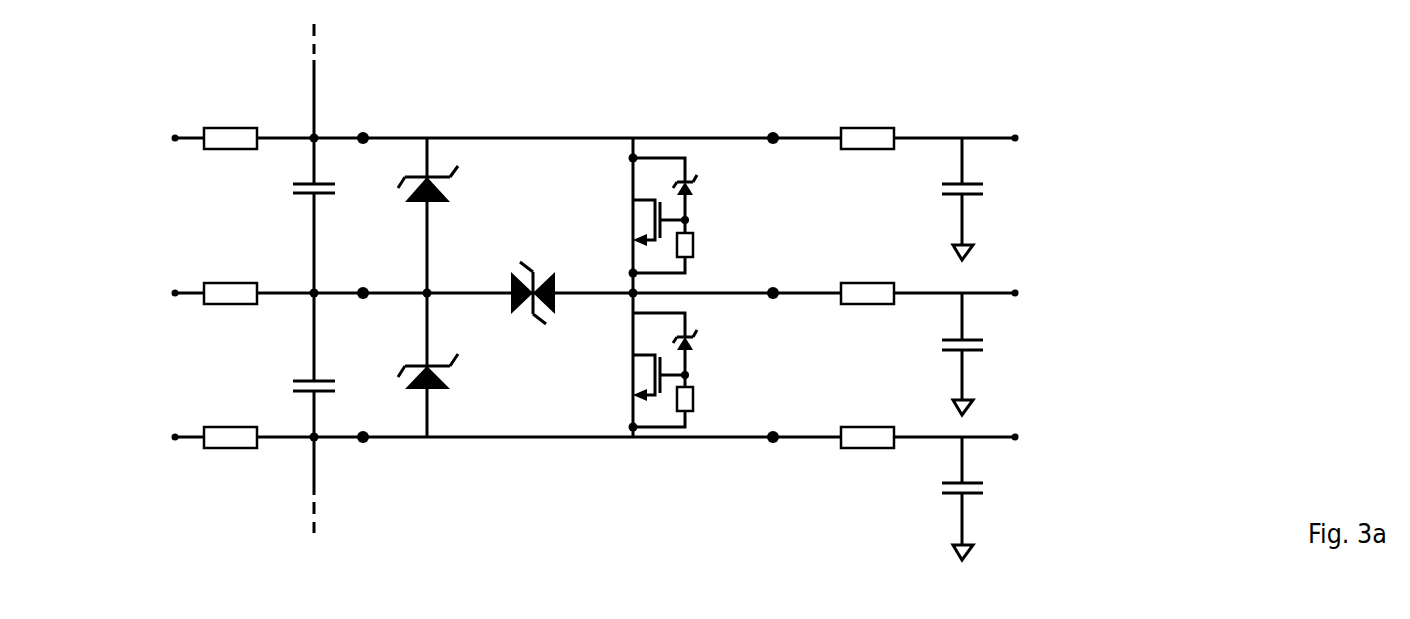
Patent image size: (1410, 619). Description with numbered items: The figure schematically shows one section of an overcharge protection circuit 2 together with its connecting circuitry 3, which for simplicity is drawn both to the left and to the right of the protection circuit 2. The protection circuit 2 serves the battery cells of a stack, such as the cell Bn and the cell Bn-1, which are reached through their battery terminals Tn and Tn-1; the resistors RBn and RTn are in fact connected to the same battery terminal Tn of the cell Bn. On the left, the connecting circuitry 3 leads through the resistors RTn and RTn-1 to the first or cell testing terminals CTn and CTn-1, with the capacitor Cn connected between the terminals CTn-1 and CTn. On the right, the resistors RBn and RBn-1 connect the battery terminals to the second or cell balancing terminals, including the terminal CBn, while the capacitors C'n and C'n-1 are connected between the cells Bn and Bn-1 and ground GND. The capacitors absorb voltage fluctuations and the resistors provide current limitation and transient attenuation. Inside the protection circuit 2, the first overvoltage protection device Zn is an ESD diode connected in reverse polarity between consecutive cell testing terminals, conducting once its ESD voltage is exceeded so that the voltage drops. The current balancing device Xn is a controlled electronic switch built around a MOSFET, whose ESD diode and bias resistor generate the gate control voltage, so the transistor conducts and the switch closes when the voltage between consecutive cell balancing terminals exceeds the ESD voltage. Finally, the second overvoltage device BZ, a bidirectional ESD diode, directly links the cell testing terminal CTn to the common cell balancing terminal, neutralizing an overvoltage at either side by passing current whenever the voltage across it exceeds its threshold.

The protection circuit 2 is at (547, 528).
The connecting circuitry 3 is at (247, 530).
The battery cell Bn is at (584, 291).
The battery cell Bn-1 is at (595, 439).
The battery terminal Tn is at (175, 292).
The battery terminal Tn-1 is at (175, 440).
The resistor RTn is at (216, 283).
The resistor RTn-1 is at (215, 427).
The capacitor Cn is at (293, 382).
The cell testing terminal CTn is at (362, 288).
The cell testing terminal CTn-1 is at (363, 443).
The first overvoltage protection device Zn is at (455, 368).
The second overvoltage device BZ is at (527, 262).
The current balancing device Xn is at (708, 355).
The cell balancing terminal CBn is at (773, 433).
The resistor RBn is at (866, 283).
The resistor RBn-1 is at (867, 427).
The capacitor C'n is at (1004, 355).
The capacitor C'n-1 is at (1017, 497).
The ground GND is at (975, 252).